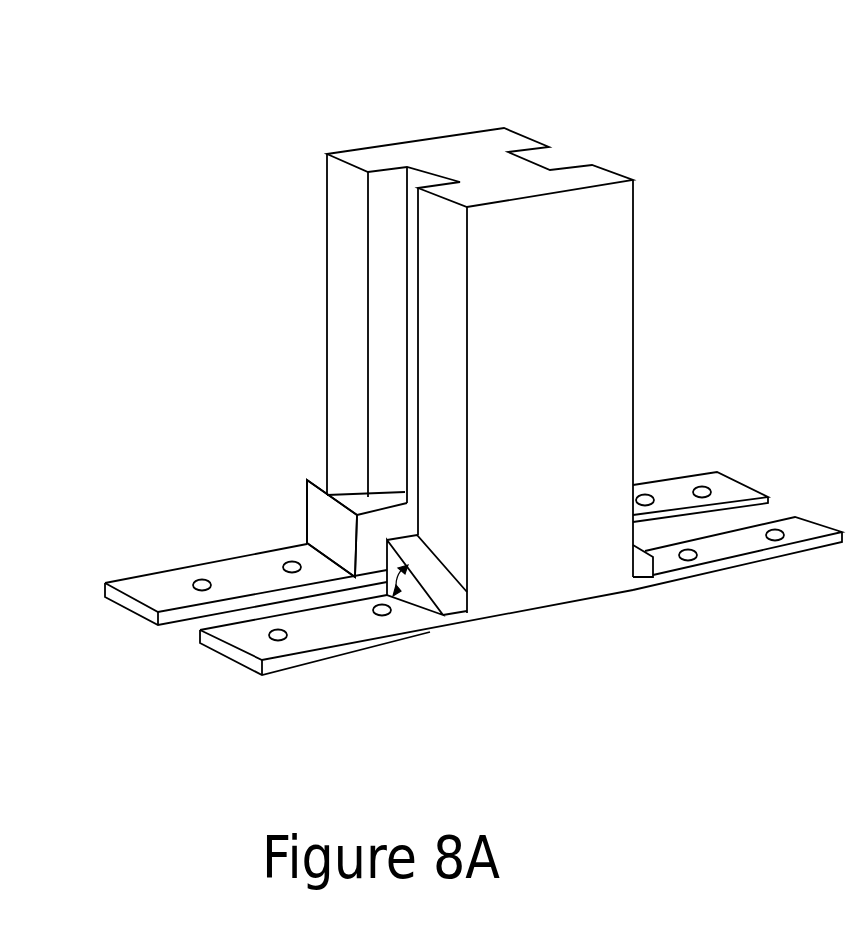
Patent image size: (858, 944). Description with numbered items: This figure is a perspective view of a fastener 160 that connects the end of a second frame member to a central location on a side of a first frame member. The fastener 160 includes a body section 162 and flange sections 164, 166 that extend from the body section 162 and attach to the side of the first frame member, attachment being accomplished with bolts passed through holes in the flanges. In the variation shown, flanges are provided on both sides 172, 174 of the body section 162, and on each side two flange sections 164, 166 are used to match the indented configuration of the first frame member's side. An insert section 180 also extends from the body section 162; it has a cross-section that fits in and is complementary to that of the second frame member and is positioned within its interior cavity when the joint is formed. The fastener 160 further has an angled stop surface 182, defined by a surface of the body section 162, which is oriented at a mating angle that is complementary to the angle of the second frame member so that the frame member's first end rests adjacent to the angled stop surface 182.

The fastener 160 is at (594, 93).
The body section 162 is at (310, 520).
The flange section 164 is at (265, 570).
The flange section 166 is at (680, 492).
The side 172 is at (332, 551).
The side 174 is at (637, 457).
The insert section 180 is at (392, 155).
The angled stop surface 182 is at (330, 484).